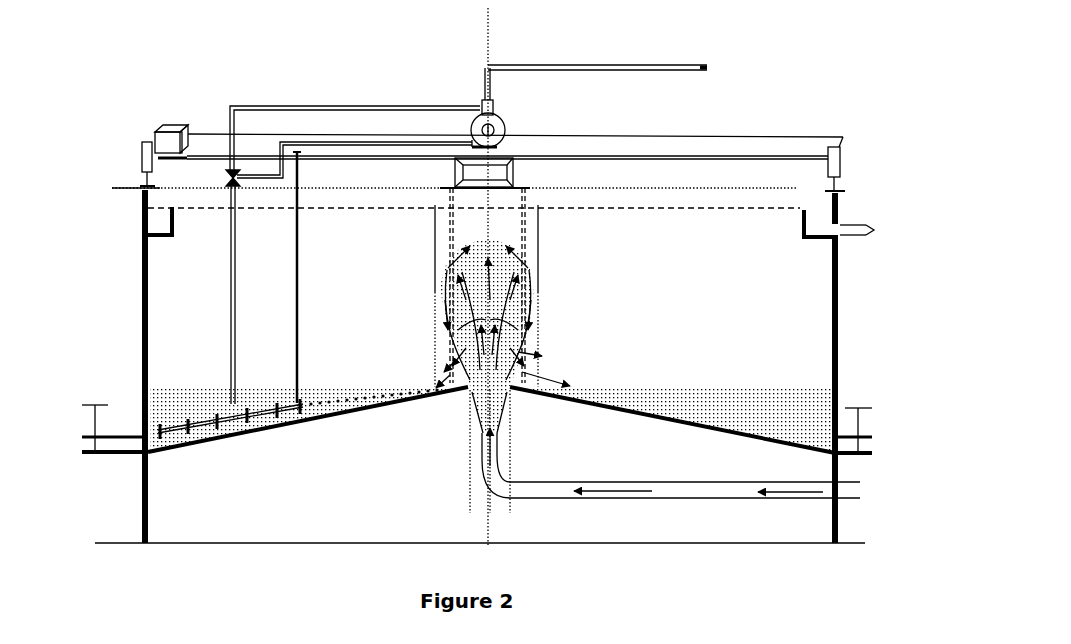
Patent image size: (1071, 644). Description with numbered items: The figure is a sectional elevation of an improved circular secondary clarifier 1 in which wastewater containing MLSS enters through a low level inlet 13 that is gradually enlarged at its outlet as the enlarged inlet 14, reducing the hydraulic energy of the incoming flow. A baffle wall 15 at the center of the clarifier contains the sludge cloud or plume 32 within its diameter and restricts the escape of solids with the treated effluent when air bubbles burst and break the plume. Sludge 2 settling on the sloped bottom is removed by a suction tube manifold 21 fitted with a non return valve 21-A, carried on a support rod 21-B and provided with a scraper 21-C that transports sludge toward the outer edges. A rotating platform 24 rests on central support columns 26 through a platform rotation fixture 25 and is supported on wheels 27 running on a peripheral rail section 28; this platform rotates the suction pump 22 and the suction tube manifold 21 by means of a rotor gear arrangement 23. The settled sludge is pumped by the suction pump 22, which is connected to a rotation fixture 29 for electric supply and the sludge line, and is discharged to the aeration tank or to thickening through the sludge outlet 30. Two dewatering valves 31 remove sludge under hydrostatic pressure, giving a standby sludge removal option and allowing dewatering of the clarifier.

The clarifier tank 1 is at (800, 206).
The sludge layer 2 is at (672, 417).
The inlet 13 is at (703, 497).
The gradually enlarged inlet 14 is at (476, 404).
The baffle wall 15 is at (541, 217).
The suction tube manifold 21 is at (197, 424).
The non return valve 21-A is at (241, 187).
The support rod 21-B is at (300, 293).
The scraper 21-C is at (347, 405).
The suction pump 22 is at (508, 126).
The rotor gear arrangement 23 is at (171, 125).
The platform 24 is at (665, 141).
The platform rotation fixture 25 is at (516, 173).
The columns 26 is at (516, 300).
The wheel 27 is at (133, 158).
The rail section 28 is at (140, 180).
The rotation fixture 29 is at (474, 101).
The sludge outlet 30 is at (707, 68).
The valves for dewatering 31 is at (485, 418).
The sludge clouds 32 is at (446, 294).